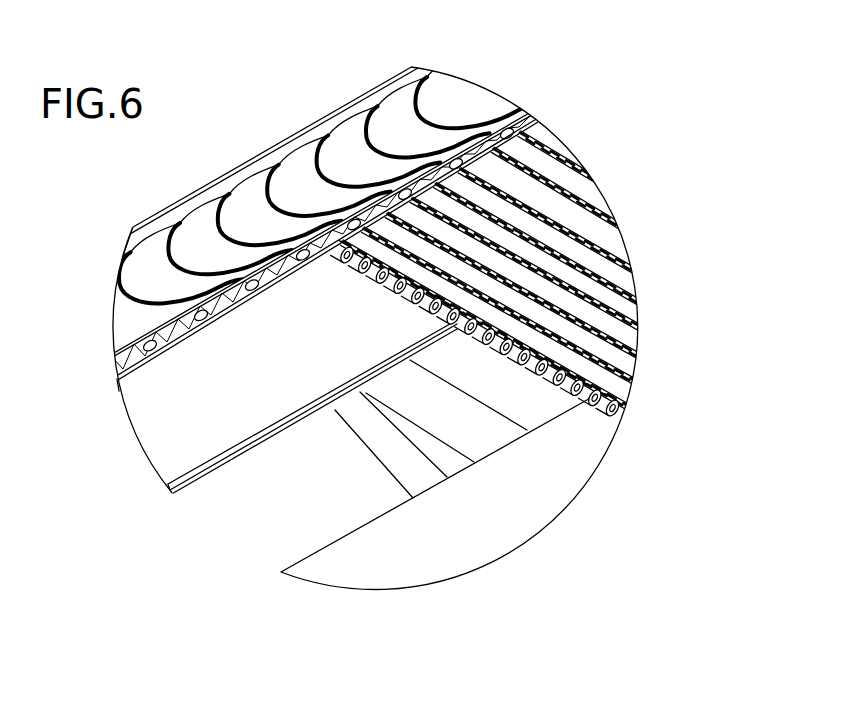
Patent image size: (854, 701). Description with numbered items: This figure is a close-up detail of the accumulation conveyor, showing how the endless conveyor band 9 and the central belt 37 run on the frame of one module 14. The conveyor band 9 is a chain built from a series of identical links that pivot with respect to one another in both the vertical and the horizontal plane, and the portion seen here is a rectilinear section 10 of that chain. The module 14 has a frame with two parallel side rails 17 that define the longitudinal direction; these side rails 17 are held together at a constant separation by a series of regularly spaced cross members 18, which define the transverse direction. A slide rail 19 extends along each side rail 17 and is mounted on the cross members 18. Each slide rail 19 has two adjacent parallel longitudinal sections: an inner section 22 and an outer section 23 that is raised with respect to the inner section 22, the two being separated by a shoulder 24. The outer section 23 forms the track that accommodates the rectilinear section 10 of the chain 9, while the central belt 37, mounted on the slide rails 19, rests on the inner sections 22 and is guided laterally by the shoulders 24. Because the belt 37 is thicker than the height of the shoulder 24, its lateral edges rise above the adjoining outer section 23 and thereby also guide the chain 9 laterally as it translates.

The endless conveyor band 9 is at (333, 160).
The rectilinear section 10 is at (442, 103).
The module 14 is at (267, 150).
The side rail 17 is at (187, 214).
The cross member 18 is at (480, 433).
The slide rail 19 is at (400, 488).
The inner section 22 is at (188, 448).
The outer section 23 is at (125, 365).
The shoulder 24 is at (230, 318).
The central belt 37 is at (600, 229).